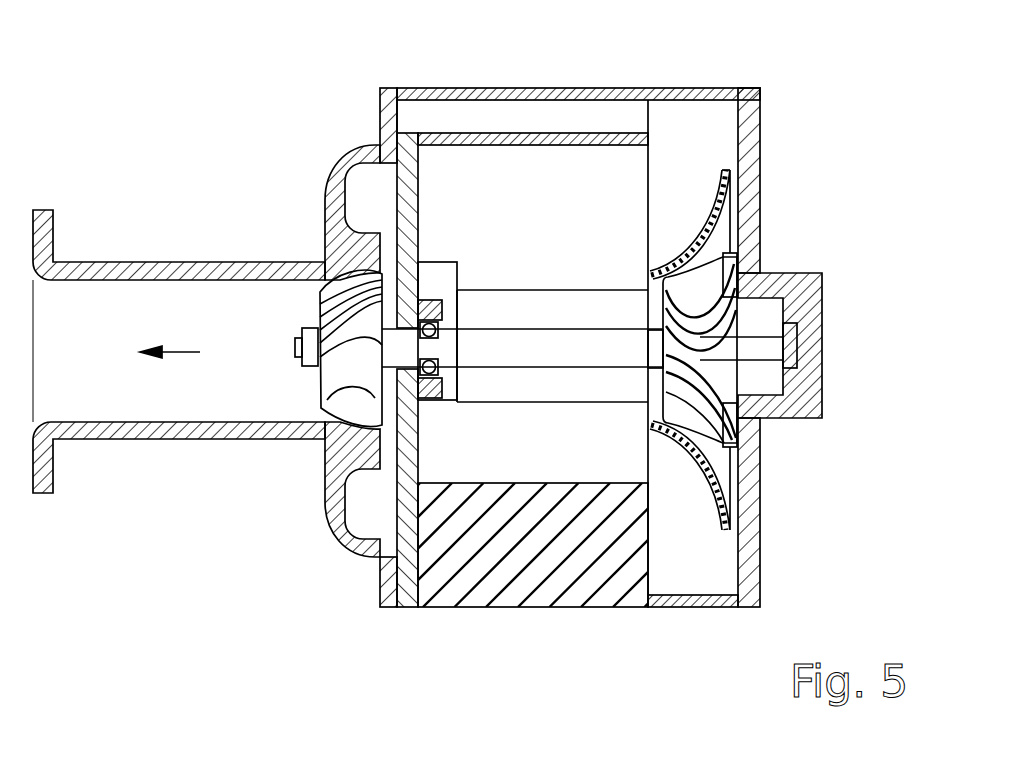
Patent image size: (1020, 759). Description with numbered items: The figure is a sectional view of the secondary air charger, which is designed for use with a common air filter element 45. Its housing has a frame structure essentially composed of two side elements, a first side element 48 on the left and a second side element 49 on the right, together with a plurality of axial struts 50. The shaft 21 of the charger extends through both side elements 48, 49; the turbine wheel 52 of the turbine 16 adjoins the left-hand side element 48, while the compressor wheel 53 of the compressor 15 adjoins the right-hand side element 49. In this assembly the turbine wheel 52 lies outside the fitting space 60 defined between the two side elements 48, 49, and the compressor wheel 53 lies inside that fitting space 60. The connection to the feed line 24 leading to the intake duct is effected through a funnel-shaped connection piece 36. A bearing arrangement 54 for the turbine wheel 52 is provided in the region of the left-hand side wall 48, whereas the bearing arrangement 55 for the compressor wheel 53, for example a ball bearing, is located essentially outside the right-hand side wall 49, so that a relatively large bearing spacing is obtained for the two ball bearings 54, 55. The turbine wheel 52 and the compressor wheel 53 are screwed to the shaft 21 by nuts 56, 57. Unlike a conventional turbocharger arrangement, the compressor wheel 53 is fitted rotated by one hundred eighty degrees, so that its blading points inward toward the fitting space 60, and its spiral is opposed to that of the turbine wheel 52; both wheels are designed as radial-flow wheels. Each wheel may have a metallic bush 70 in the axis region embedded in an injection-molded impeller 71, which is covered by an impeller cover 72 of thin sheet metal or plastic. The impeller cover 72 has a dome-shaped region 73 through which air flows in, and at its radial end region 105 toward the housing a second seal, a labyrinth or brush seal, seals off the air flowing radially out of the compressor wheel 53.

The axial struts 50 is at (540, 87).
The radial end region of the impeller cover 105 is at (712, 187).
The impeller cover 72 is at (658, 255).
The dome-shaped region 73 is at (686, 220).
The turbine 16 is at (348, 300).
The turbine wheel 52 is at (351, 348).
The bearing arrangement of the turbine wheel 54 is at (428, 320).
The fitting space 60 is at (557, 224).
The shaft 21 is at (543, 350).
The bearing arrangement of the compressor wheel 55 is at (760, 305).
The nut 57 is at (797, 342).
The metallic bush 70 is at (652, 350).
The compressor 15 is at (740, 422).
The compressor wheel 53 is at (700, 363).
The impeller 71 is at (700, 363).
The feed line 24 is at (176, 400).
The connection piece 36 is at (186, 245).
The nut 56 is at (300, 370).
The first side element 48 is at (397, 580).
The air filter element 45 is at (503, 563).
The second side element 49 is at (695, 563).